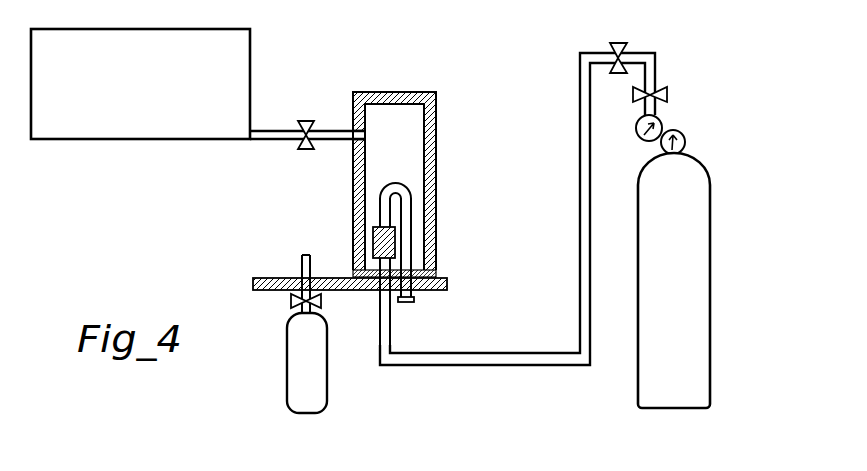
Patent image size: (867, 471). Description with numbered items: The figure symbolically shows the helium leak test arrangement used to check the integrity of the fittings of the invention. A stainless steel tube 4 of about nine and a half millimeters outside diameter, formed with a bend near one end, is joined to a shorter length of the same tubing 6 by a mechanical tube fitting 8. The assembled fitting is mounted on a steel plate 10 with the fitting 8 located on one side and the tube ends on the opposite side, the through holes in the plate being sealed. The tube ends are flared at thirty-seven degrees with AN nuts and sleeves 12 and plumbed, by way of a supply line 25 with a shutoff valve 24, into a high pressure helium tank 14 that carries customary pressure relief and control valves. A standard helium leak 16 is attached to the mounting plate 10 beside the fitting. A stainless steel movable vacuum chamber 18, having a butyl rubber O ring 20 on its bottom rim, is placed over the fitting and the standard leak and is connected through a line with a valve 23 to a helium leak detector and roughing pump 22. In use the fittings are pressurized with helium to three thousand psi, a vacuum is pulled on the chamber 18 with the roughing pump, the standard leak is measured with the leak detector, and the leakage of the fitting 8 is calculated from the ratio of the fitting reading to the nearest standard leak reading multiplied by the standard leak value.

The stainless steel tube 4 is at (388, 183).
The tubing 6 is at (380, 332).
The mechanical tube fitting 8 is at (373, 242).
The steel plate 10 is at (280, 278).
The AN nuts and sleeves 12 is at (408, 302).
The high pressure helium tank 14 is at (683, 273).
The standard helium leak 16 is at (318, 373).
The movable vacuum chamber 18 is at (387, 92).
The O ring 20 is at (436, 277).
The helium leak detector and roughing pump 22 is at (250, 63).
The valve line to leak detector 23 is at (262, 131).
The valve 24 is at (622, 44).
The helium supply pipe 25 is at (478, 353).